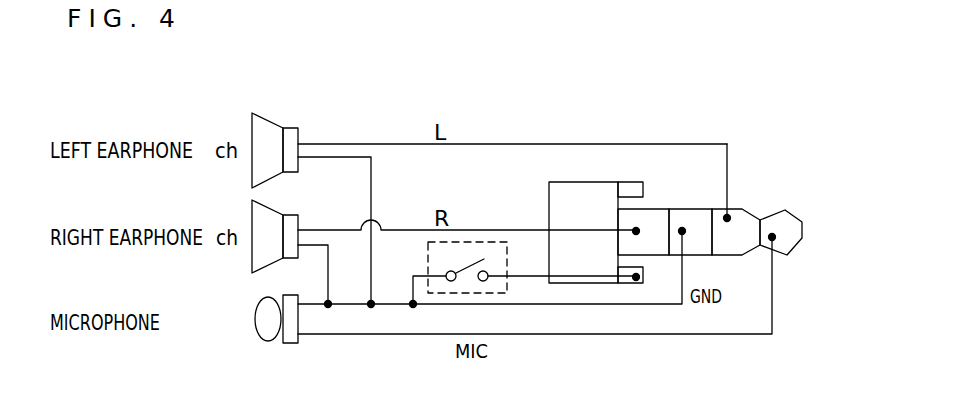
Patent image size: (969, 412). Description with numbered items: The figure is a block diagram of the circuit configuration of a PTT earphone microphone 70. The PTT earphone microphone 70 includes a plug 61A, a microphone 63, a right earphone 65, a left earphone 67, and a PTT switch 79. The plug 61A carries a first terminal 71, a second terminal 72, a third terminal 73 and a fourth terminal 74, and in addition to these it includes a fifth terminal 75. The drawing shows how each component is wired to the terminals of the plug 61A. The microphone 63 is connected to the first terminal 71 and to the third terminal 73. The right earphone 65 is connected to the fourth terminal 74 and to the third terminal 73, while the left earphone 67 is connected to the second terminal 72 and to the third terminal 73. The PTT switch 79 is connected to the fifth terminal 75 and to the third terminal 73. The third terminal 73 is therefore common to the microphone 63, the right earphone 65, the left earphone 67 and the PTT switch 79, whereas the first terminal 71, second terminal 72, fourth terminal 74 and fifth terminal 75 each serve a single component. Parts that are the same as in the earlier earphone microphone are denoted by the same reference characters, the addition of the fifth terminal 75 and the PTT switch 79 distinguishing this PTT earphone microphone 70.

The plug 61A is at (795, 208).
The microphone 63 is at (262, 320).
The right earphone 65 is at (262, 212).
The left earphone 67 is at (262, 125).
The PTT earphone microphone 70 is at (391, 87).
The first terminal 71 is at (797, 250).
The second terminal 72 is at (732, 247).
The third terminal 73 is at (690, 218).
The fourth terminal 74 is at (652, 218).
The fifth terminal 75 is at (633, 188).
The PTT switch 79 is at (471, 242).